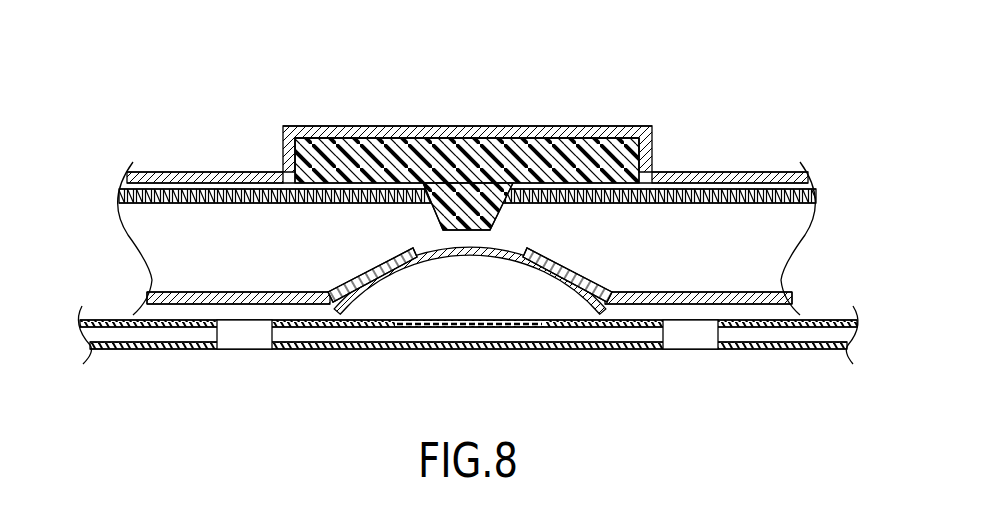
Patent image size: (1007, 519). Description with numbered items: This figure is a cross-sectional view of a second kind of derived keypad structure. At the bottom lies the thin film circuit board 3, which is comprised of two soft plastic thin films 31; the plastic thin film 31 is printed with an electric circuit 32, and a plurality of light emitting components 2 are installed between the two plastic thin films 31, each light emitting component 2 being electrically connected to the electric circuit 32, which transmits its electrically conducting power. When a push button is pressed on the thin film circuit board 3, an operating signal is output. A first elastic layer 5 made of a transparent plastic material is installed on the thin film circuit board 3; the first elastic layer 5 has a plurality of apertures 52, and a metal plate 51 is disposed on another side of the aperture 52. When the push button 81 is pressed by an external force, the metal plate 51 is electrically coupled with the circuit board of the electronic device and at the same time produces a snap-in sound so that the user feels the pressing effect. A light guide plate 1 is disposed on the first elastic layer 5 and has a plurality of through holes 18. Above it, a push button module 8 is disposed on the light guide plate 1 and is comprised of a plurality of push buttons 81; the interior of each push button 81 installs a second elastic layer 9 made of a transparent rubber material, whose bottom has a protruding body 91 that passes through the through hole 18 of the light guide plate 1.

The light guide plate 1 is at (762, 198).
The light emitting component 2 is at (693, 338).
The thin film circuit board 3 is at (448, 376).
The first elastic layer 5 is at (745, 297).
The push button module 8 is at (432, 130).
The second elastic layer 9 is at (312, 158).
The through hole 18 is at (440, 183).
The plastic thin film 31 is at (187, 347).
The electric circuit 32 is at (380, 325).
The metal plate 51 is at (475, 250).
The aperture 52 is at (424, 250).
The push button 81 is at (508, 127).
The protruding body 91 is at (490, 220).